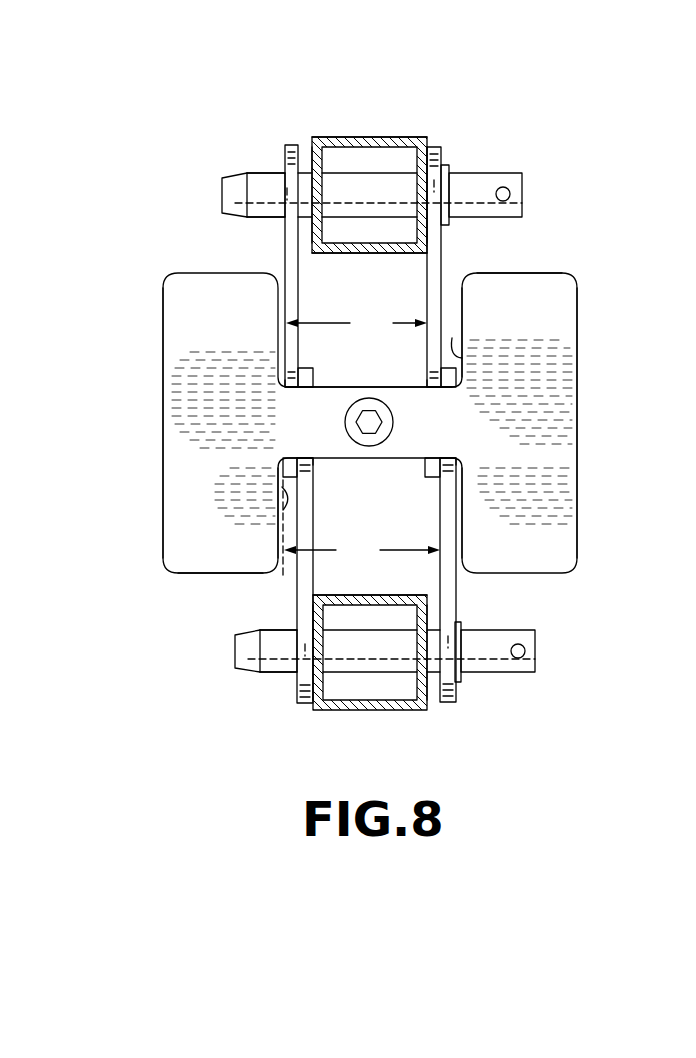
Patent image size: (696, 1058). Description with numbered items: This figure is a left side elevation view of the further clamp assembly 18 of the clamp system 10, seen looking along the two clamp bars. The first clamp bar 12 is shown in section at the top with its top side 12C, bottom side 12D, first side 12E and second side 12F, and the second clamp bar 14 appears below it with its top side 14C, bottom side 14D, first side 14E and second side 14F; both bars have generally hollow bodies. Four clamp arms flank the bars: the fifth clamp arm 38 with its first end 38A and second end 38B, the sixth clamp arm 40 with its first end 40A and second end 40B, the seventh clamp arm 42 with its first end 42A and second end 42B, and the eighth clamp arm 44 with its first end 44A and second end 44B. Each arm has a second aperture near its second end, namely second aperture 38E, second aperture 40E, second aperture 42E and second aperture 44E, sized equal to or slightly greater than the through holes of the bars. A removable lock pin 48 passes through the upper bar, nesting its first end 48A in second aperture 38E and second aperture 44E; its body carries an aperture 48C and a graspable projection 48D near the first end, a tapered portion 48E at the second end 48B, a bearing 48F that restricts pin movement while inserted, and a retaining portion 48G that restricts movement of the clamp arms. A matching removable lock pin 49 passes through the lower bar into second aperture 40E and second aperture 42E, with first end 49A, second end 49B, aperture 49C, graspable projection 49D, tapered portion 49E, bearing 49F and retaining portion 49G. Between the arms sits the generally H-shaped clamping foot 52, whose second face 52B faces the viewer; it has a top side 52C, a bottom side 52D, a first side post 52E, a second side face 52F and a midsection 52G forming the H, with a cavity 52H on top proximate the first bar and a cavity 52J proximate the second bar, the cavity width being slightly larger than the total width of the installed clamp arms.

The clamp system 10 is at (365, 429).
The further clamp assembly 18 is at (443, 757).
The first clamp bar 12 is at (342, 130).
The top side 12C is at (380, 137).
The bottom side 12D is at (372, 254).
The first side 12E is at (441, 157).
The second side 12F is at (253, 258).
The second clamp bar 14 is at (347, 646).
The top side 14C is at (397, 595).
The bottom side 14D is at (356, 720).
The first side 14E is at (440, 615).
The second side 14F is at (300, 617).
The fifth clamp arm 38 is at (547, 236).
The first end 38A is at (437, 388).
The second end 38B is at (436, 138).
The second aperture 38E is at (452, 183).
The sixth clamp arm 40 is at (538, 601).
The first end 40A is at (448, 460).
The second end 40B is at (455, 712).
The second aperture 40E is at (463, 640).
The seventh clamp arm 42 is at (194, 598).
The first end 42A is at (305, 460).
The second end 42B is at (300, 712).
The second aperture 42E is at (300, 652).
The eighth clamp arm 44 is at (194, 247).
The first end 44A is at (290, 388).
The second end 44B is at (289, 135).
The second aperture 44E is at (287, 195).
The removable lock pin 48 is at (406, 192).
The first end 48A is at (532, 193).
The second end 48B is at (222, 194).
The aperture 48C is at (503, 188).
The graspable projection 48D is at (506, 201).
The tapered portion 48E is at (240, 176).
The bearing 48F is at (267, 172).
The retaining portion 48G is at (449, 193).
The removable lock pin 49 is at (419, 654).
The first end 49A is at (545, 650).
The second end 49B is at (235, 652).
The aperture 49C is at (516, 644).
The graspable projection 49D is at (519, 660).
The tapered portion 49E is at (242, 634).
The bearing 49F is at (285, 628).
The retaining portion 49G is at (461, 652).
The clamping foot 52 is at (205, 347).
The second face 52B is at (547, 503).
The top side 52C is at (535, 273).
The bottom side 52D is at (190, 575).
The first side post 52E is at (578, 305).
The second side face 52F is at (132, 333).
The midsection 52G is at (312, 418).
The cavity 52H is at (462, 358).
The cavity 52J is at (280, 503).